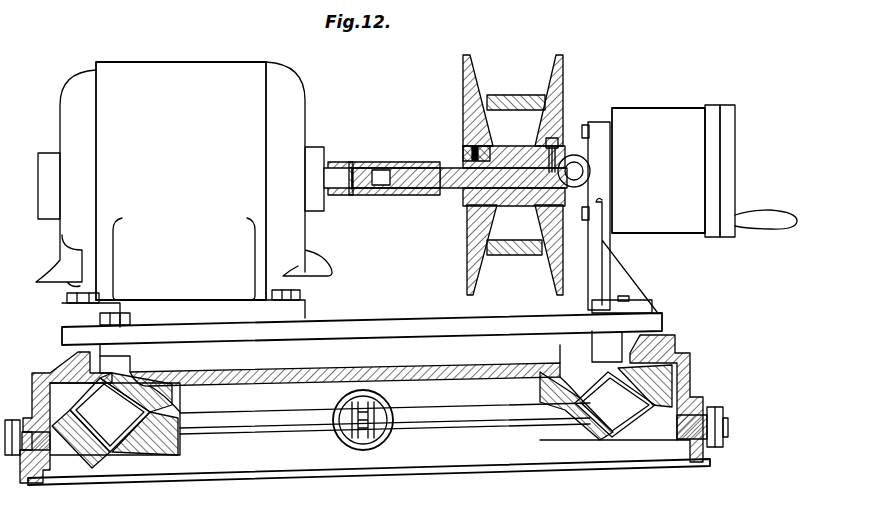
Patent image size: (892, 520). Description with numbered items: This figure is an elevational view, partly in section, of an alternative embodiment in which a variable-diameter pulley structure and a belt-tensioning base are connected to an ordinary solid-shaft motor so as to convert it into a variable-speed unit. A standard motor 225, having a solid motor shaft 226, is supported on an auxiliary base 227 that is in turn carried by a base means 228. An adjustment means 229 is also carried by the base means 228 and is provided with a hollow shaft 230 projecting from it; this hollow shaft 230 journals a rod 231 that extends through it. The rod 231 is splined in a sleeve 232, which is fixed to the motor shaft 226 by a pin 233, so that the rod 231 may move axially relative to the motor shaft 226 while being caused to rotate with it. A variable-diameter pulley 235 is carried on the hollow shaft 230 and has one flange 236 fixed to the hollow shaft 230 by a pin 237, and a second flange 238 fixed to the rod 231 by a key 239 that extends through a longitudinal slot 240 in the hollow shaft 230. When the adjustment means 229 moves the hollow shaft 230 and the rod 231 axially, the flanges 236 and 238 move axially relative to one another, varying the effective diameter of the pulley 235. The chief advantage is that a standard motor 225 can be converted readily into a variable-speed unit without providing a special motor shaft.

The standard motor 225 is at (172, 76).
The solid motor shaft 226 is at (338, 165).
The auxiliary base 227 is at (392, 318).
The base means 228 is at (740, 369).
The adjustment means 229 is at (672, 120).
The hollow shaft 230 is at (600, 172).
The rod 231 is at (445, 196).
The sleeve 232 is at (376, 188).
The pin 233 is at (353, 168).
The variable-diameter pulley 235 is at (511, 159).
The flange 236 is at (468, 80).
The pin 237 is at (470, 152).
The flange 238 is at (560, 62).
The key 239 is at (530, 160).
The longitudinal slot 240 is at (562, 145).